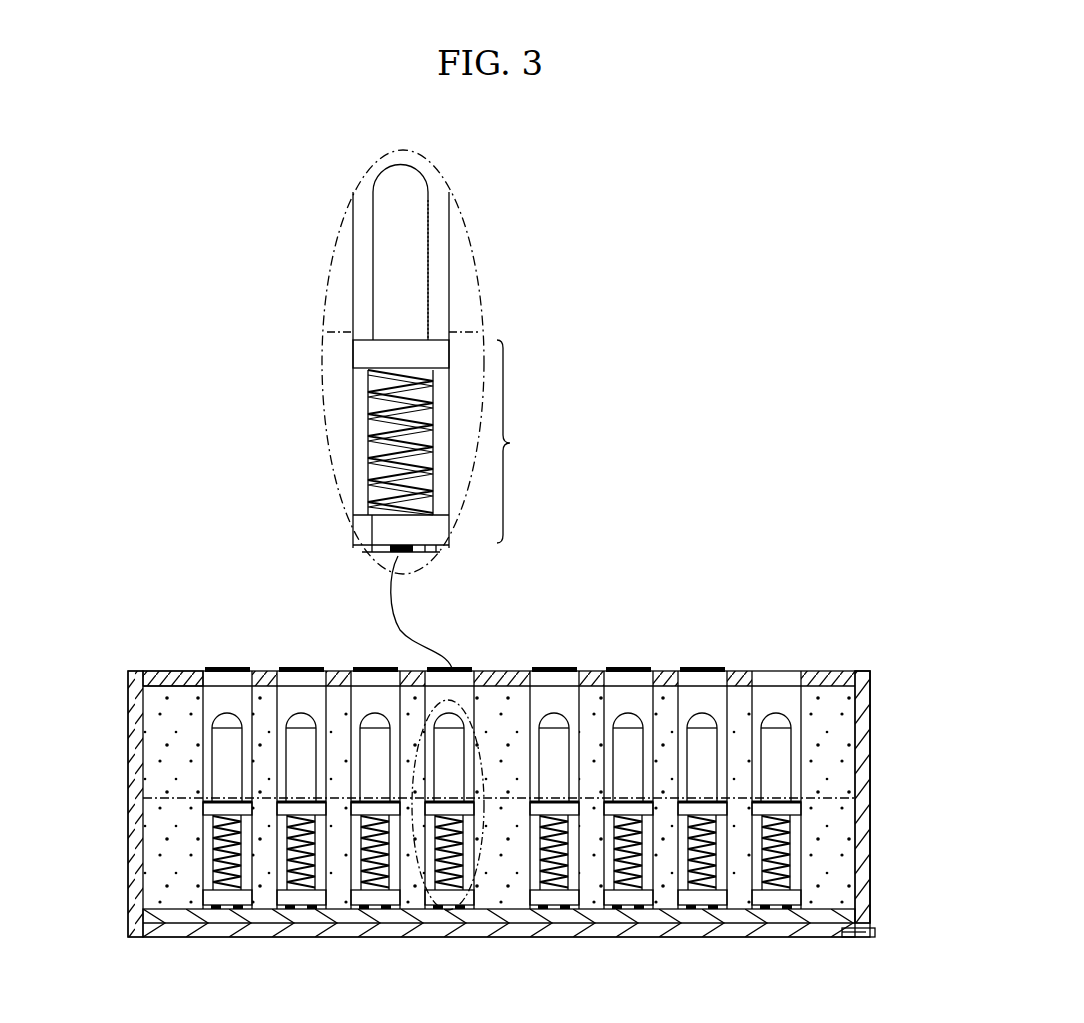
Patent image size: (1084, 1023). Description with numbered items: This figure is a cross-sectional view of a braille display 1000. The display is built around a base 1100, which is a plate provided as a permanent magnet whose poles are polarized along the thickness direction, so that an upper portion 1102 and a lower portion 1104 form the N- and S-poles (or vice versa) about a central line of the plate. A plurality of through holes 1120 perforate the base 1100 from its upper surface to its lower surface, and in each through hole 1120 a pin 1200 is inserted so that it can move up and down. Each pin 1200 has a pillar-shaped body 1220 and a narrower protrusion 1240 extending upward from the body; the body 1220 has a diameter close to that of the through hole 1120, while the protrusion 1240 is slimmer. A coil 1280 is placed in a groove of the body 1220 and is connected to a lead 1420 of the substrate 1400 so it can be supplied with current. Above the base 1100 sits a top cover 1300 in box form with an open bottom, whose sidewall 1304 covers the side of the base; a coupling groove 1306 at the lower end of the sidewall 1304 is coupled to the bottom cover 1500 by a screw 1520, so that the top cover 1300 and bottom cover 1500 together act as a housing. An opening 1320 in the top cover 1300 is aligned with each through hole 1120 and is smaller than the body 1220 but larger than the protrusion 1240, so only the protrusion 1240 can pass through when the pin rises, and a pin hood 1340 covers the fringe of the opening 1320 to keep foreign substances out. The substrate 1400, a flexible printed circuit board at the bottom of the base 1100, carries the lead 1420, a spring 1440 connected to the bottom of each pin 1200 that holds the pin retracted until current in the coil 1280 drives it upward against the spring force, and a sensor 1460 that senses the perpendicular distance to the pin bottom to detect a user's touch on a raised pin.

The braille display 1000 is at (762, 543).
The base 1100 is at (855, 824).
The upper portion 1102 is at (166, 742).
The lower portion 1104 is at (168, 842).
The through hole 1120 is at (186, 686).
The pin 1200 is at (310, 152).
The body 1220 is at (534, 441).
The protrusion 1240 is at (418, 174).
The coil 1280 is at (365, 422).
The top cover 1300 is at (640, 668).
The sidewall 1304 is at (870, 723).
The coupling groove 1306 is at (870, 915).
The opening 1320 is at (240, 667).
The pin hood 1340 is at (208, 668).
The substrate 1400 is at (203, 938).
The lead 1420 is at (352, 938).
The spring 1440 is at (455, 938).
The sensor 1460 is at (633, 938).
The bottom cover 1500 is at (705, 930).
The screw 1520 is at (845, 937).